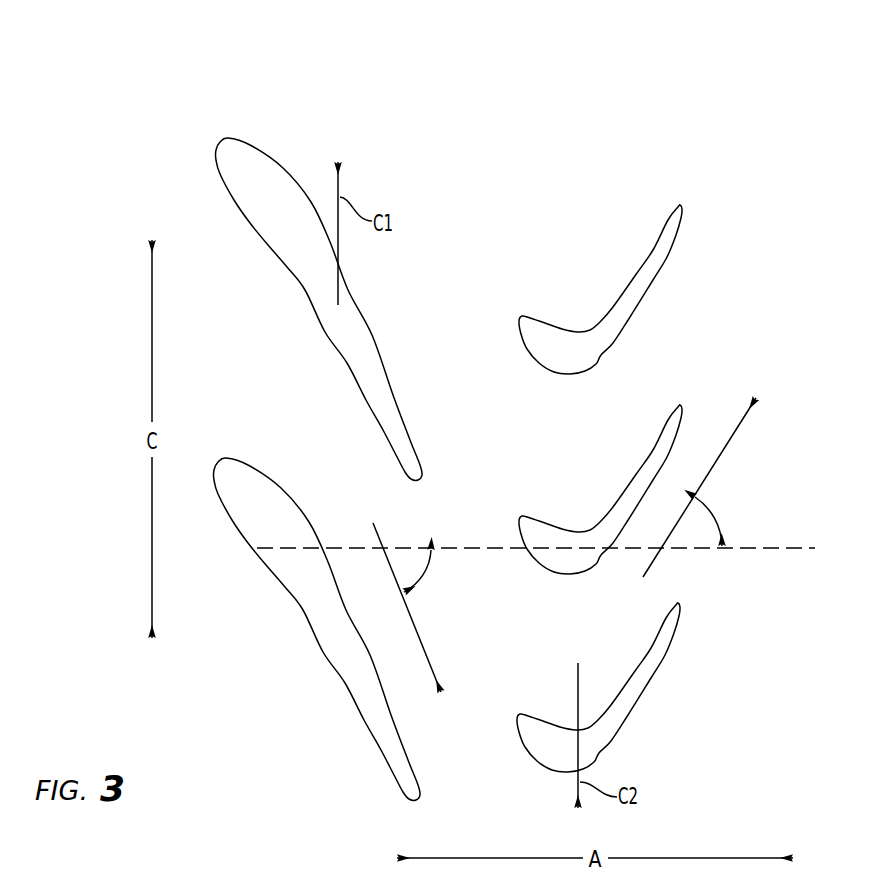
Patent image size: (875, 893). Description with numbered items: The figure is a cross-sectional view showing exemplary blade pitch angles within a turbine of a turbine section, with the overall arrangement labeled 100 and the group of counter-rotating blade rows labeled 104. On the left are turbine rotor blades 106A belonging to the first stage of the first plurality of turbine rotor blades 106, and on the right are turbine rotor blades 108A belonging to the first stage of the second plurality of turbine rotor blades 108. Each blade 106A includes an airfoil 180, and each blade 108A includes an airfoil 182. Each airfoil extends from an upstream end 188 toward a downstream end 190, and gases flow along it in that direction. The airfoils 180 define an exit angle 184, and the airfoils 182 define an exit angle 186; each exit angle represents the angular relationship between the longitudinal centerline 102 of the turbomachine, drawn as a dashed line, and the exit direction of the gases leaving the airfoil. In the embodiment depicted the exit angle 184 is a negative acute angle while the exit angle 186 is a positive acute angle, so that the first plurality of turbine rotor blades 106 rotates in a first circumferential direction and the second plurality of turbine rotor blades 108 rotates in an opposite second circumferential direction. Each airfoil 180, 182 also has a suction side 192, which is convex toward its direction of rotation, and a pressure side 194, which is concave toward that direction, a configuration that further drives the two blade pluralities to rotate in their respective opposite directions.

The gas turbine engine 100 is at (832, 136).
The longitudinal centerline 102 is at (815, 547).
The fan module 104 is at (590, 106).
The first plurality of turbine rotor blades 106 is at (284, 111).
The first stage of turbine rotor blades 106A is at (404, 264).
The second plurality of turbine rotor blades 108 is at (605, 201).
The first stage of turbine rotor blades 108A is at (690, 256).
The airfoil 180 is at (266, 220).
The airfoil 182 is at (638, 287).
The exit angle 184 is at (426, 578).
The exit angle 186 is at (716, 519).
The upstream end 188 is at (222, 454).
The downstream end 190 is at (420, 802).
The suction side 192 is at (383, 346).
The pressure side 194 is at (345, 366).